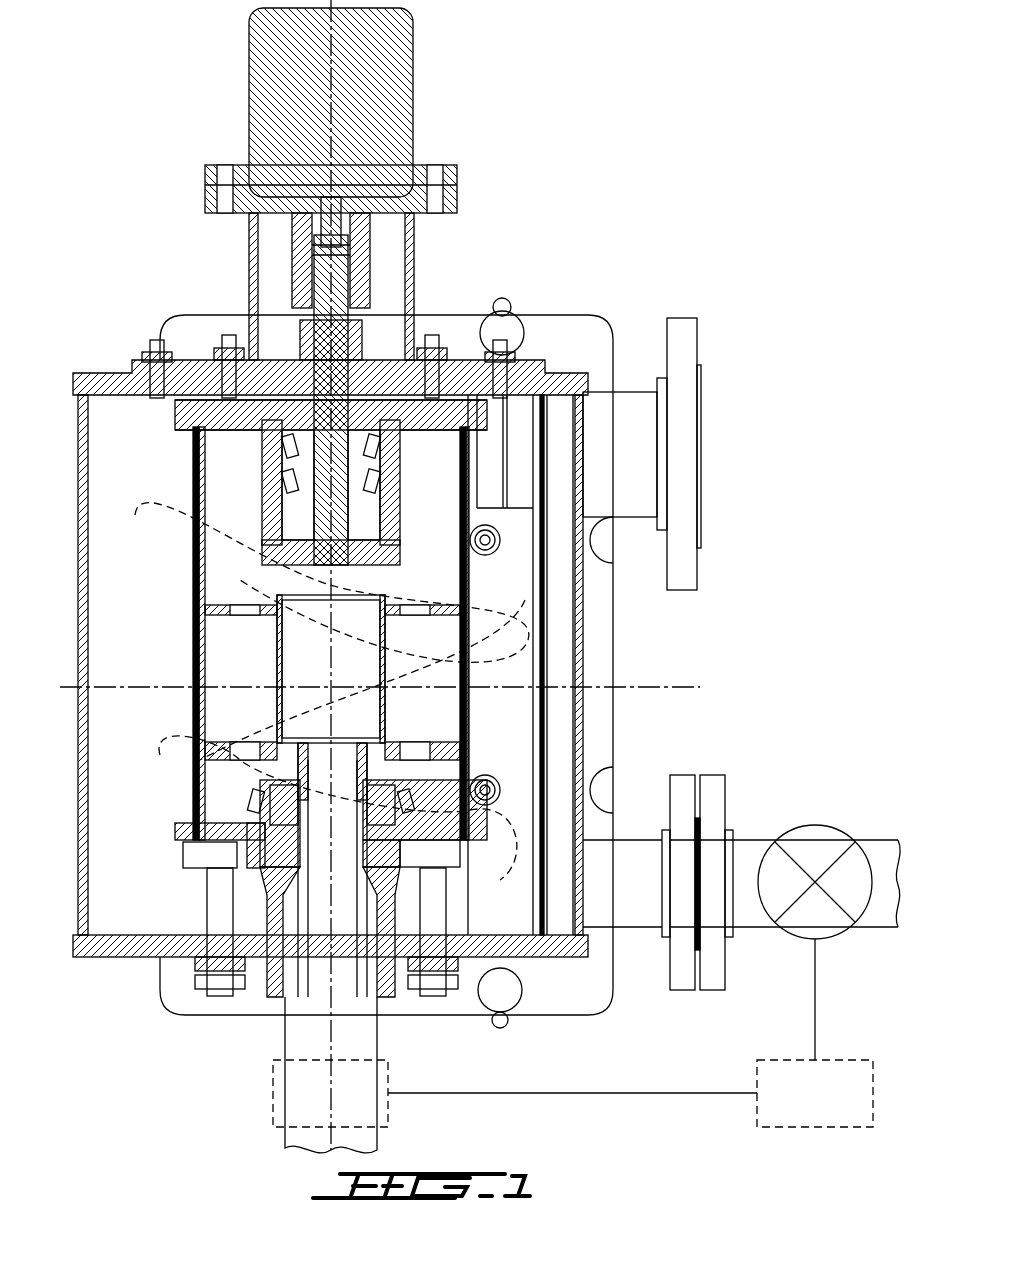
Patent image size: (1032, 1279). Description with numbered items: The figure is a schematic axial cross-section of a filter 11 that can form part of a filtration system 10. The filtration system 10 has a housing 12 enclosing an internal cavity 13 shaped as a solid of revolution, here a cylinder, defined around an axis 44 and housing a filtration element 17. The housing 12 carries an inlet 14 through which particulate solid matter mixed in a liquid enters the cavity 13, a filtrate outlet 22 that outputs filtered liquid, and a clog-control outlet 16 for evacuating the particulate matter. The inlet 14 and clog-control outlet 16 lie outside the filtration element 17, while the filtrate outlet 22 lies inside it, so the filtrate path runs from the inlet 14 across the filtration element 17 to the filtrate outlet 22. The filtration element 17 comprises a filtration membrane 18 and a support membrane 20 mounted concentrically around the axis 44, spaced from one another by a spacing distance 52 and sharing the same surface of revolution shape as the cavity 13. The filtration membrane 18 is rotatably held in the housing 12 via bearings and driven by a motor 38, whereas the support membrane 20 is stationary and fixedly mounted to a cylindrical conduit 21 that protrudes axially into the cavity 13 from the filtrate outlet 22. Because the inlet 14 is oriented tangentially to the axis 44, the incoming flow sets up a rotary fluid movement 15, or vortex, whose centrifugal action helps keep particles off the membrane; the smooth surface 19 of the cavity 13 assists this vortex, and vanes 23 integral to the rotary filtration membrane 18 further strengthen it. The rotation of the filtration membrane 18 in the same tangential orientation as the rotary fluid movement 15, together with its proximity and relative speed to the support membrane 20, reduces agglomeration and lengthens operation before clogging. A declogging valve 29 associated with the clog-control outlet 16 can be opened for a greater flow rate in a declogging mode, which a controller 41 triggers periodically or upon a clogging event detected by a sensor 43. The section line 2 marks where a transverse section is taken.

The filtration system 10 is at (540, 205).
The filter 11 is at (548, 372).
The housing 12 is at (580, 372).
The internal cavity 13 is at (500, 662).
The inlet 14 is at (630, 445).
The rotary fluid movement 15 is at (190, 770).
The clog-control outlet 16 is at (633, 890).
The filtration element 17 is at (165, 452).
The filtration membrane 18 is at (193, 590).
The smooth surface 19 is at (88, 635).
The support membrane 20 is at (193, 475).
The cylindrical conduit 21 is at (392, 1010).
The filtrate outlet 22 is at (313, 1040).
The vanes 23 is at (440, 860).
The declogging valve 29 is at (795, 850).
The motor 38 is at (383, 58).
The controller 41 is at (757, 1108).
The sensor 43 is at (273, 1092).
The axis 44 is at (345, 292).
The spacing distance 52 is at (175, 352).
The section line 2 is at (52, 716).